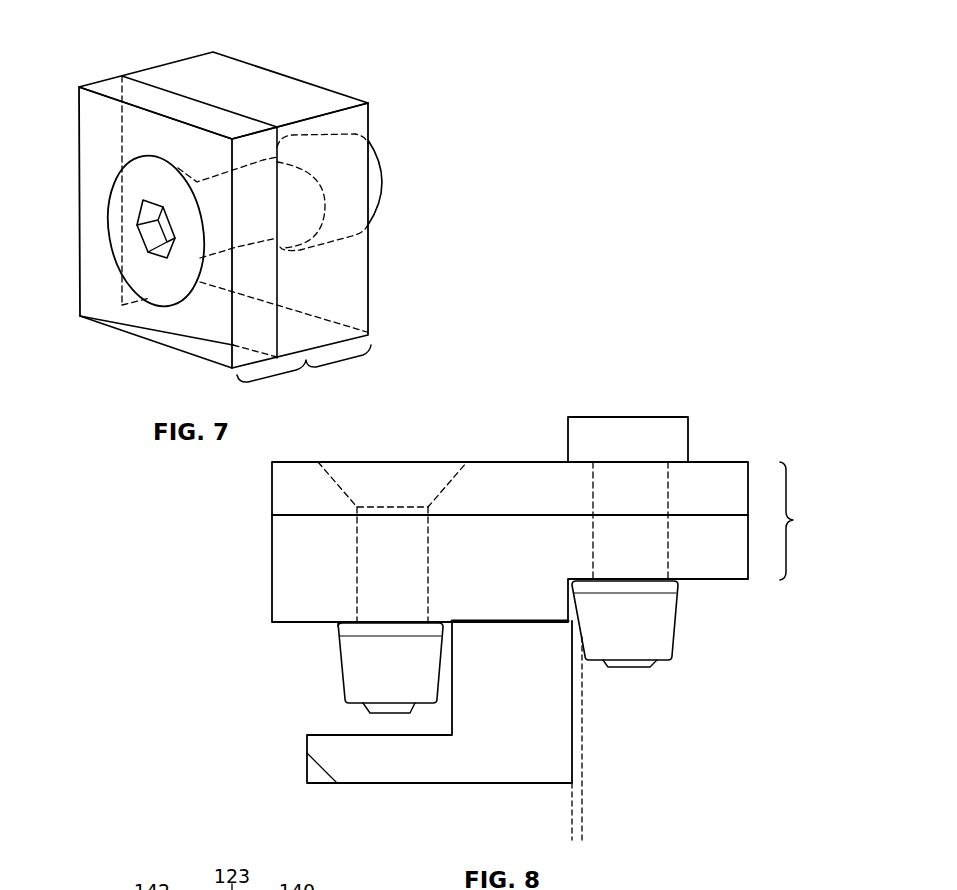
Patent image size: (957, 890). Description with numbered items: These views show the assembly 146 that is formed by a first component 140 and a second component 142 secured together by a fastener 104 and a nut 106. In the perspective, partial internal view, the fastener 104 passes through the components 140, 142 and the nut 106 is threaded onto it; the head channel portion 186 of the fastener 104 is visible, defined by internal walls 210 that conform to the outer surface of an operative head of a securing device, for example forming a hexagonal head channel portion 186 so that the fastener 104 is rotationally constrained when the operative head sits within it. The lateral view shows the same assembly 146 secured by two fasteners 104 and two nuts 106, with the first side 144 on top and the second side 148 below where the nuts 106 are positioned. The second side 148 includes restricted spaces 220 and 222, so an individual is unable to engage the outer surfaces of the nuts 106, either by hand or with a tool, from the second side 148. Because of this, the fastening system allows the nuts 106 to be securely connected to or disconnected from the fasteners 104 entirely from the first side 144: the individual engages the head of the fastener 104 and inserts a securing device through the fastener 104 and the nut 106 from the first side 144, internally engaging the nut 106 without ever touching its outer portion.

In FIG. 7, the first component 140 is at (96, 93).
In FIG. 8, the first component 140 is at (508, 461).
In FIG. 7, the second component 142 is at (214, 66).
In FIG. 8, the second component 142 is at (748, 580).
In FIG. 7, the nut 106 is at (373, 202).
In FIG. 8, the nut 106 is at (338, 664).
In FIG. 7, the internal walls 210 is at (152, 233).
In FIG. 7, the head channel portion 186 is at (150, 258).
In FIG. 7, the assembly 146 is at (304, 373).
In FIG. 8, the assembly 146 is at (808, 521).
In FIG. 8, the first side 144 is at (478, 448).
In FIG. 8, the fastener 104 is at (627, 417).
In FIG. 8, the second side 148 is at (647, 691).
In FIG. 8, the restricted space 222 is at (312, 718).
In FIG. 8, the restricted space 220 is at (572, 830).